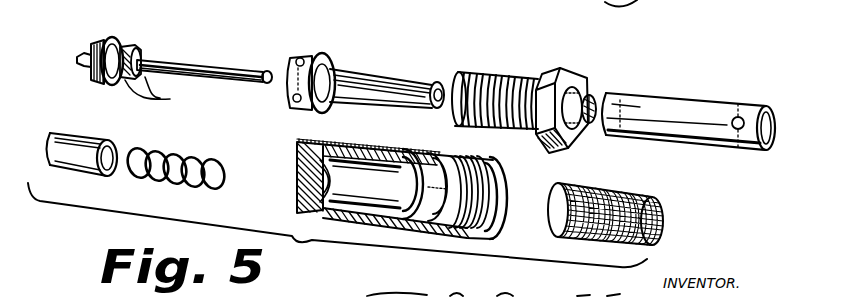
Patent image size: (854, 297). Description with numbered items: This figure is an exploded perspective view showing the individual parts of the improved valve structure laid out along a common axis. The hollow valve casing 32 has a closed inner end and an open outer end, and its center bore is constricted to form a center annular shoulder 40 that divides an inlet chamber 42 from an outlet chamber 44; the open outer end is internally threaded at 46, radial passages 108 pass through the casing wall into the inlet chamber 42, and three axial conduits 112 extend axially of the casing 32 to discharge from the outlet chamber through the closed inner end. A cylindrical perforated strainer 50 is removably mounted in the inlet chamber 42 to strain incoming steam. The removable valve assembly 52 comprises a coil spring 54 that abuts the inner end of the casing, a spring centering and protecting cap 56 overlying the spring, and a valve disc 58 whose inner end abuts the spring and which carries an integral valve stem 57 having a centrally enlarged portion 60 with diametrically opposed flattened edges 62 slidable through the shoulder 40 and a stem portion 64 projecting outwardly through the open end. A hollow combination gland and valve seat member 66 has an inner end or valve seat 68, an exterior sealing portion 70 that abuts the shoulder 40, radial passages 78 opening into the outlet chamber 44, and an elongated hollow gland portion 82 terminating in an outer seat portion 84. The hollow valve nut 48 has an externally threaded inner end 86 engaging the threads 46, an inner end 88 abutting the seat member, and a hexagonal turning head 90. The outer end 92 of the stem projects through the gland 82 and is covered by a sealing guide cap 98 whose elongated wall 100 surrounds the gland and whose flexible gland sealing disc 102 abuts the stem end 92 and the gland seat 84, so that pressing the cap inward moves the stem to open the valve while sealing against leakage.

The valve casing 32 is at (410, 133).
The center annular shoulder 40 is at (405, 156).
The inlet chamber 42 is at (346, 153).
The outlet chamber 44 is at (448, 160).
The internally threaded outer end 46 is at (500, 186).
The valve nut 48 is at (586, 96).
The cylindrical perforated strainer 50 is at (637, 192).
The valve assembly 52 is at (478, 33).
The coil spring 54 is at (186, 150).
The spring centering and protecting cap 56 is at (95, 134).
The valve stem 57 is at (193, 68).
The valve disc 58 is at (113, 43).
The centrally enlarged portion 60 is at (138, 53).
The flattened edges 62 is at (165, 93).
The stem portion 64 is at (263, 72).
The combination gland and valve seat member 66 is at (386, 68).
The inner end or valve seat 68 is at (338, 50).
The exterior sealing portion 70 is at (297, 57).
The radial passages 78 is at (291, 100).
The gland portion 82 is at (411, 83).
The outer seat portion 84 is at (441, 85).
The externally threaded inner end 86 is at (510, 84).
The inner end 88 is at (462, 74).
The turning head 90 is at (573, 80).
The outer end of valve stem 92 is at (262, 82).
The sealing guide cap 98 is at (671, 97).
The elongated wall 100 is at (703, 103).
The gland sealing disc 102 is at (605, 100).
The radial passages 108 is at (312, 212).
The axial conduits 112 is at (308, 142).